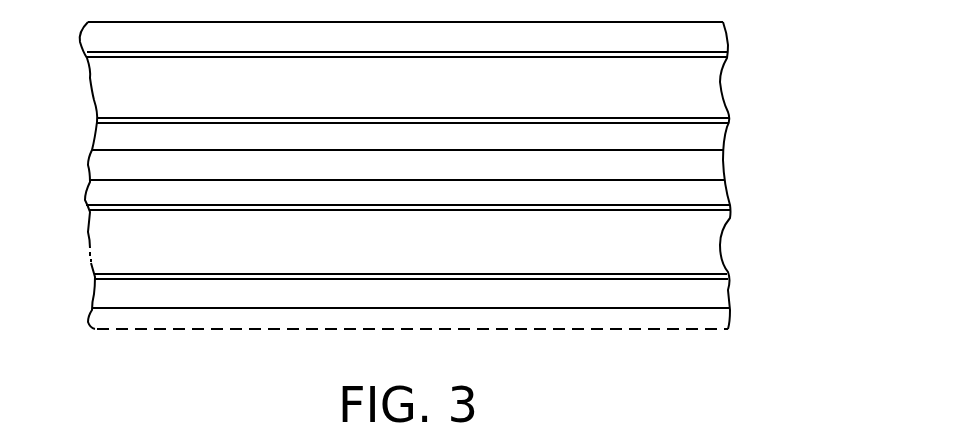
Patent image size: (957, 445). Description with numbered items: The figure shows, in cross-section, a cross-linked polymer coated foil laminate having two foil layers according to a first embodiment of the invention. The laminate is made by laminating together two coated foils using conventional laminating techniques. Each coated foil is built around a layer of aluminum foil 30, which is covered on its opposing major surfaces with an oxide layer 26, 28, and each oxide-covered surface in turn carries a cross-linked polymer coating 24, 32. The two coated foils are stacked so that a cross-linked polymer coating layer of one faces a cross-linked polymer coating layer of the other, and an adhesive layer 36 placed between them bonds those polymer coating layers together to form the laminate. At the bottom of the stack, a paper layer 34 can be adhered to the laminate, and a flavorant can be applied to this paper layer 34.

The cross-linked polymer coating 24 is at (727, 190).
The oxide layer 26 is at (90, 208).
The oxide layer 28 is at (95, 276).
The aluminum foil 30 is at (408, 165).
The cross-linked polymer coating 32 is at (730, 290).
The paper layer 34 is at (88, 317).
The adhesive layer 36 is at (88, 163).